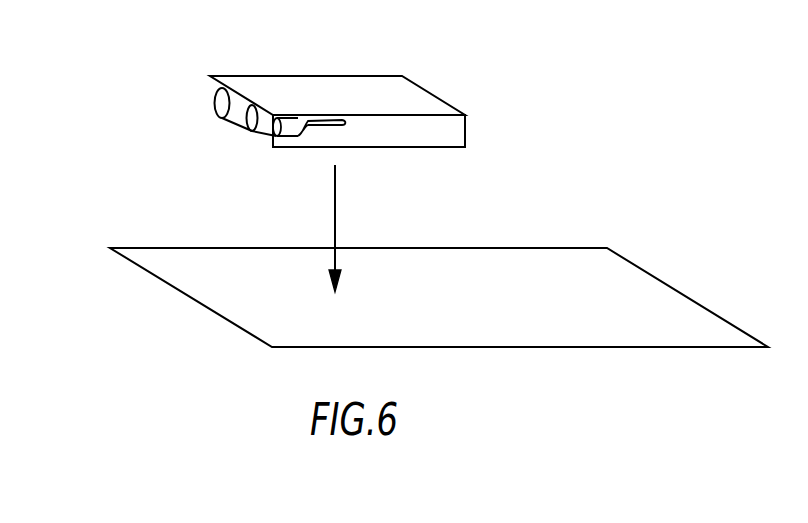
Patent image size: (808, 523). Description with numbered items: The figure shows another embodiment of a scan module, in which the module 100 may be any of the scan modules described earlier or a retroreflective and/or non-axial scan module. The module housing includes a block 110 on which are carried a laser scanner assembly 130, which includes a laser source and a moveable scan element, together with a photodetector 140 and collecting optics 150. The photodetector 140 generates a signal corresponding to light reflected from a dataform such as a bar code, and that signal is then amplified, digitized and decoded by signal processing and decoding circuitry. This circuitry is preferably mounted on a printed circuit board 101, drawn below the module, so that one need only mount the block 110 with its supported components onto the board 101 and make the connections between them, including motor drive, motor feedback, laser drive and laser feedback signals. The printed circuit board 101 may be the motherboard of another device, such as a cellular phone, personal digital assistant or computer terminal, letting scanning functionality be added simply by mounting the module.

The module 100 is at (348, 100).
The block 110 is at (465, 128).
The laser scanner assembly 130 is at (217, 105).
The photodetector 140 is at (261, 147).
The collecting optics 150 is at (258, 133).
The printed circuit board 101 is at (533, 253).